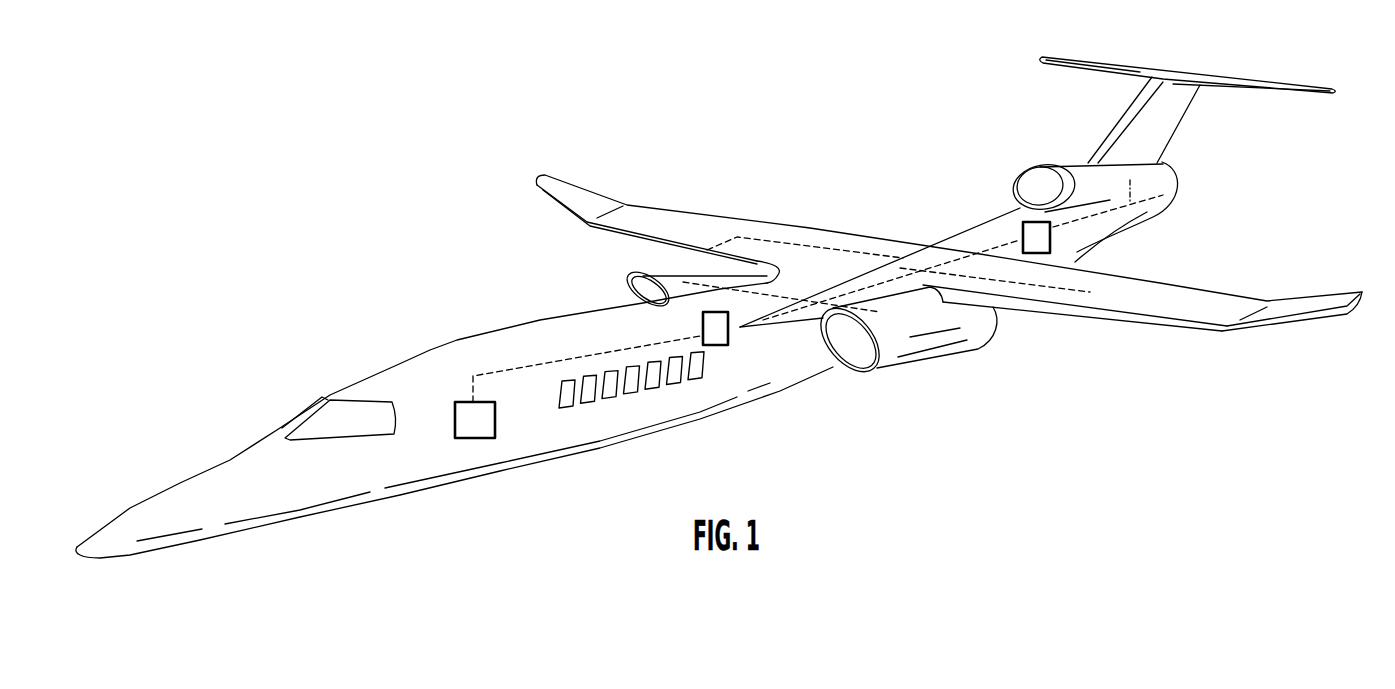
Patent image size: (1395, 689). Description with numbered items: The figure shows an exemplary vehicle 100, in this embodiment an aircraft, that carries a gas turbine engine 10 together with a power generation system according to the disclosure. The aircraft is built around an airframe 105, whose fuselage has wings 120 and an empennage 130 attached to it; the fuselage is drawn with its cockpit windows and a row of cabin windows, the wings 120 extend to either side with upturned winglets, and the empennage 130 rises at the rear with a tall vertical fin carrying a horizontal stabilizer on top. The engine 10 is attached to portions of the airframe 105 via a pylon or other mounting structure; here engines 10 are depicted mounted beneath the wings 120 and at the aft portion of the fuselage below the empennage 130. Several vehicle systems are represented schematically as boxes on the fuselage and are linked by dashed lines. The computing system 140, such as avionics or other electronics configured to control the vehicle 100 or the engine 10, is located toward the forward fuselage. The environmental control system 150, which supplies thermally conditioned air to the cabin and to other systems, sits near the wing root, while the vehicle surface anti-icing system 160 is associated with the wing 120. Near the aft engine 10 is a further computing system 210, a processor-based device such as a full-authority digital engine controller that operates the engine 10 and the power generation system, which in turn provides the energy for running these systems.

The vehicle 100 is at (302, 160).
The airframe 105 is at (525, 277).
The engine 10 is at (657, 276).
The wings 120 is at (700, 233).
The empennage 130 is at (1207, 118).
The computing system 140 is at (497, 420).
The environmental control system 150 is at (731, 338).
The vehicle surface anti-icing system 160 is at (1037, 312).
The computing system 210 is at (1023, 228).